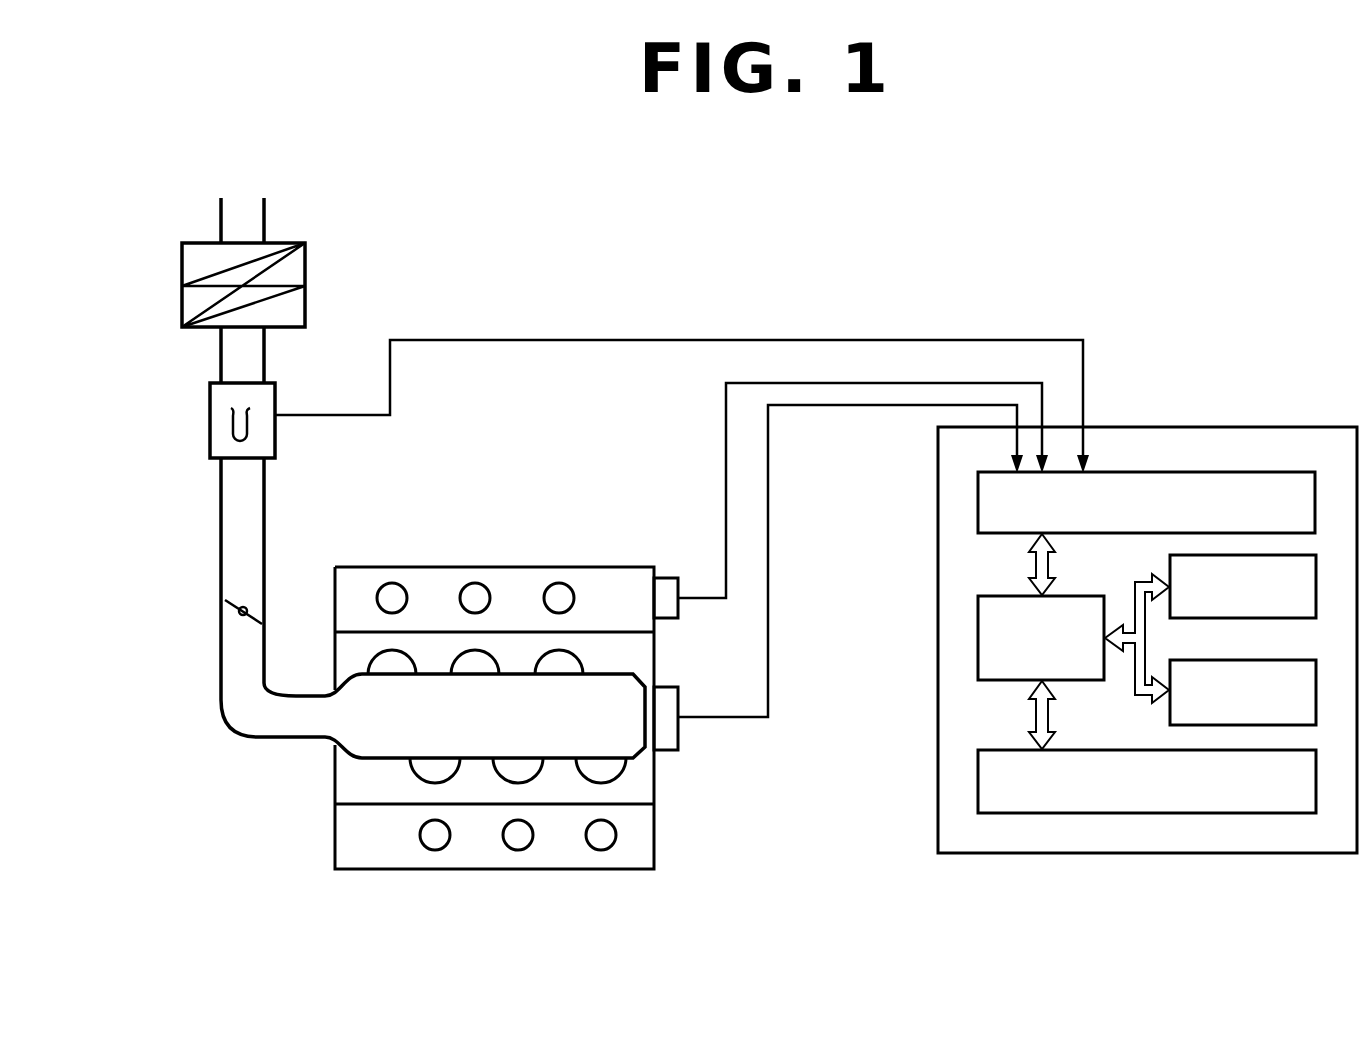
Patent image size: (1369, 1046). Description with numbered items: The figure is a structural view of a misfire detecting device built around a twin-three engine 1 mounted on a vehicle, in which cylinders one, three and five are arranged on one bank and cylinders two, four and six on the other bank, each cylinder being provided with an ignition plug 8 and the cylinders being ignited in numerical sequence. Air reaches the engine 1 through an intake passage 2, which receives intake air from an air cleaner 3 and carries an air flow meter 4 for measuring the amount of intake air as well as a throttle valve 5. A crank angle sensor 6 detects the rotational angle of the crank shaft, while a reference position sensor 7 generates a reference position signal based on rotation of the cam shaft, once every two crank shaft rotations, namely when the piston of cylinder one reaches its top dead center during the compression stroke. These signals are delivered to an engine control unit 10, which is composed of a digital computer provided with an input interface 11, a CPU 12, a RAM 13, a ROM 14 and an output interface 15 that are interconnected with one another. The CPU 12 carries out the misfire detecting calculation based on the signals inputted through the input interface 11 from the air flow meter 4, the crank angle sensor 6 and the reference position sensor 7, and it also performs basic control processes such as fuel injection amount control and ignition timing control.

The engine 1 is at (482, 552).
The intake passage 2 is at (222, 522).
The air cleaner 3 is at (305, 268).
The air flow meter 4 is at (210, 428).
The throttle valve 5 is at (228, 613).
The crank angle sensor 6 is at (680, 730).
The reference position sensor 7 is at (664, 577).
The ignition plug 8 is at (408, 594).
The engine control unit 10 is at (1190, 427).
The input interface 11 is at (1297, 472).
The CPU 12 is at (1000, 595).
The RAM 13 is at (1170, 568).
The ROM 14 is at (1170, 715).
The output interface 15 is at (1000, 750).